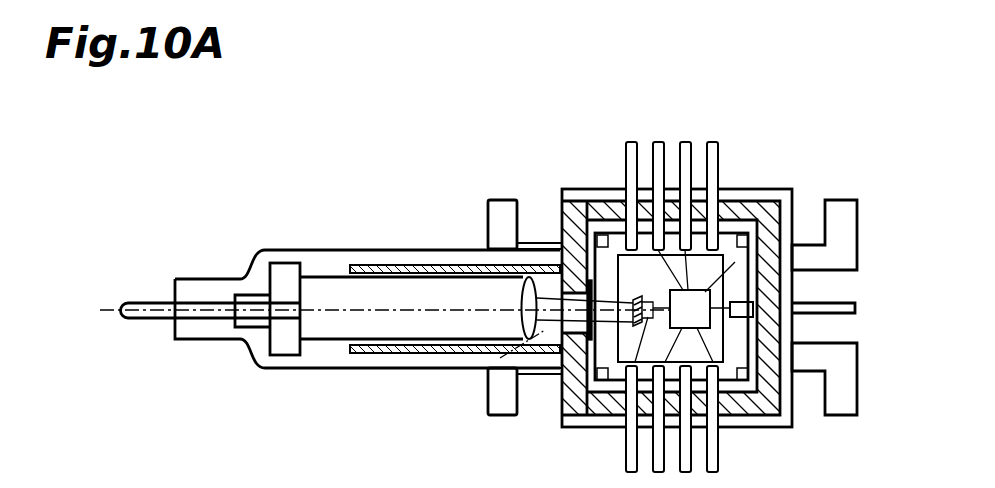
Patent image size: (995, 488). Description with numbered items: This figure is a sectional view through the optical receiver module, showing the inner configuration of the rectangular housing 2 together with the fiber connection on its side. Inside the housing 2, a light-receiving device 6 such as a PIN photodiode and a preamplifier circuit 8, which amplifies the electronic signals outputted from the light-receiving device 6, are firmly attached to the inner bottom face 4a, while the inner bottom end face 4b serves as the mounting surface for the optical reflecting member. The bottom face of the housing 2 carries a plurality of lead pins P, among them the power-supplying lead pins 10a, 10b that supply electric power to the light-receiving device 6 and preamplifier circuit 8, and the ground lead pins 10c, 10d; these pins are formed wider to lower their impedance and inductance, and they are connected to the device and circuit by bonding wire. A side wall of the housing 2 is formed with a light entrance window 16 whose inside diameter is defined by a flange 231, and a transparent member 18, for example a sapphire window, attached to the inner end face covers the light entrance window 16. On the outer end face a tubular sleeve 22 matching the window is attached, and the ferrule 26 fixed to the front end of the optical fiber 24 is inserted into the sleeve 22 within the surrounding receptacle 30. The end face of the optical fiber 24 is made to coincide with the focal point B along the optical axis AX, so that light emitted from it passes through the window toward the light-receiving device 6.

The housing 2 is at (752, 189).
The inner bottom face 4a is at (723, 350).
The inner bottom end face 4b is at (762, 380).
The light-receiving device 6 is at (638, 298).
The preamplifier circuit 8 is at (712, 292).
The power-supplying lead pin 10a is at (840, 200).
The power-supplying lead pin 10b is at (840, 415).
The ground lead pin 10c is at (497, 200).
The ground lead pin 10d is at (500, 415).
The light entrance window 16 is at (553, 372).
The transparent member 18 is at (584, 410).
The tubular sleeve 22 is at (418, 265).
The optical fiber 24 is at (145, 300).
The ferrule 26 is at (331, 290).
The receptacle housing 30 is at (277, 250).
The flange 231 is at (562, 385).
The focal point B is at (538, 265).
The lead pins P is at (722, 136).
The optical axis AX is at (364, 312).